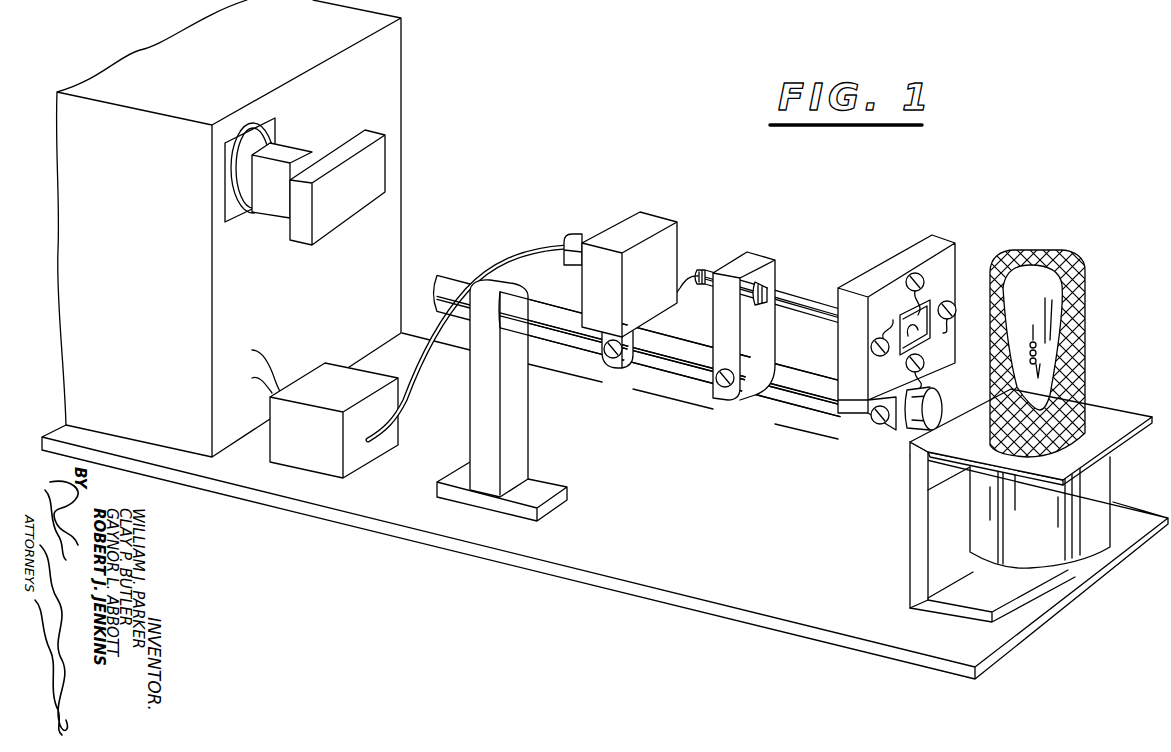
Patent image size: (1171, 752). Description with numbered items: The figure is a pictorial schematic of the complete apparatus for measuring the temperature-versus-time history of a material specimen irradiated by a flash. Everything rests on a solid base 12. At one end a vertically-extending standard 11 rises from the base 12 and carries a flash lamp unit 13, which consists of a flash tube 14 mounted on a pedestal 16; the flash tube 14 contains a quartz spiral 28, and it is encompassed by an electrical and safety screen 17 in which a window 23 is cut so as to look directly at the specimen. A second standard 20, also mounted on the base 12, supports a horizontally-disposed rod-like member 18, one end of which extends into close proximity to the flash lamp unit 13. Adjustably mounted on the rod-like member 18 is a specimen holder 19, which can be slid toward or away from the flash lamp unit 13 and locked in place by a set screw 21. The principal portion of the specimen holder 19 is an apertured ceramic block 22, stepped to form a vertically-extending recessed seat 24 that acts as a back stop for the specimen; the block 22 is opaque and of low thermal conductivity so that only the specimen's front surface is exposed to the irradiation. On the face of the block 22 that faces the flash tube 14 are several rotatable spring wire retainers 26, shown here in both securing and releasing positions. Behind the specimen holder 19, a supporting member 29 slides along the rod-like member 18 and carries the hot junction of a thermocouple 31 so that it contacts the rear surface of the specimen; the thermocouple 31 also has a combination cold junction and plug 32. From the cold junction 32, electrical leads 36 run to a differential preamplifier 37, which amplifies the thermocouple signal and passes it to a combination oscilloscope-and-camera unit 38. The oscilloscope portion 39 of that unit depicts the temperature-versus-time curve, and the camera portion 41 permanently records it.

The standard 11 is at (915, 531).
The base 12 is at (678, 520).
The flash lamp unit 13 is at (1053, 341).
The flash tube 14 is at (1008, 256).
The pedestal 16 is at (1050, 511).
The electrical and safety screen 17 is at (1048, 341).
The rod-like member 18 is at (690, 370).
The specimen holder 19 is at (897, 311).
The standard 20 is at (522, 404).
The set screw 21 is at (873, 422).
The apertured block 22 is at (896, 262).
The window 23 is at (1007, 338).
The recessed seat 24 is at (910, 357).
The spring wire retainers 26 is at (921, 297).
The quartz spiral 28 is at (1034, 318).
The supporting member 29 is at (765, 327).
The thermocouple 31 is at (793, 276).
The cold junction 32 is at (672, 245).
The electrical leads 36 is at (532, 252).
The differential preamplifier 37 is at (336, 391).
The oscilloscope-and-camera unit 38 is at (460, 138).
The oscilloscope portion 39 is at (398, 74).
The camera portion 41 is at (354, 198).